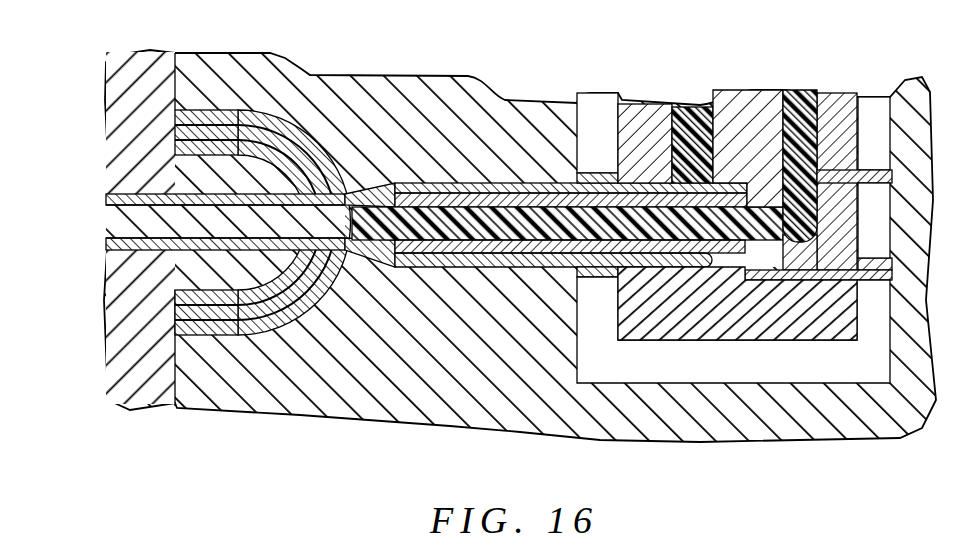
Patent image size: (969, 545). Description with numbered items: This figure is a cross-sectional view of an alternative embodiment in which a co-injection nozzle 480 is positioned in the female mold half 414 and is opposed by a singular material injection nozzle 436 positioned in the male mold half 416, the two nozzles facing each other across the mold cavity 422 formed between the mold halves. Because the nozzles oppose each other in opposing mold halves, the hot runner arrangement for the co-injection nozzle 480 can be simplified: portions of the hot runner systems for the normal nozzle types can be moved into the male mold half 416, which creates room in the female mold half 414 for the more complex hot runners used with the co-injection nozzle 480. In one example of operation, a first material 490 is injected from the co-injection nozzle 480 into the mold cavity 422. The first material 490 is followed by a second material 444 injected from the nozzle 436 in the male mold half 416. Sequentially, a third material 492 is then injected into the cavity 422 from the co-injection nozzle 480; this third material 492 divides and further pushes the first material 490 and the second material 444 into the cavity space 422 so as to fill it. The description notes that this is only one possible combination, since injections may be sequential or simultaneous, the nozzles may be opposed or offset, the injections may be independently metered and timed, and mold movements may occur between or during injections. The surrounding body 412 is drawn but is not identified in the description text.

The body 412 is at (267, 340).
The female mold half 414 is at (715, 440).
The male mold half 416 is at (133, 397).
The mold cavity 422 is at (190, 337).
The singular material injection nozzle 436 is at (133, 227).
The second material 444 is at (128, 190).
The co-injection nozzle 480 is at (507, 183).
The first material 490 is at (400, 168).
The third material 492 is at (355, 268).